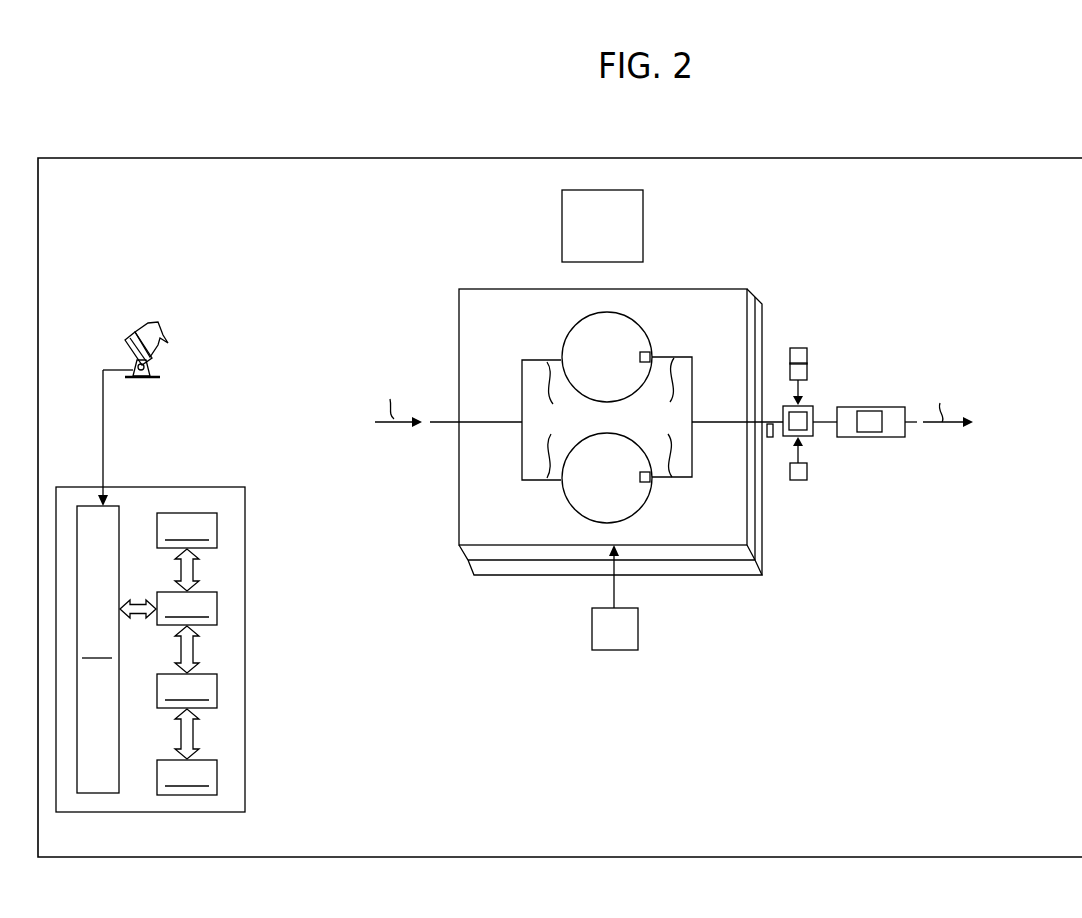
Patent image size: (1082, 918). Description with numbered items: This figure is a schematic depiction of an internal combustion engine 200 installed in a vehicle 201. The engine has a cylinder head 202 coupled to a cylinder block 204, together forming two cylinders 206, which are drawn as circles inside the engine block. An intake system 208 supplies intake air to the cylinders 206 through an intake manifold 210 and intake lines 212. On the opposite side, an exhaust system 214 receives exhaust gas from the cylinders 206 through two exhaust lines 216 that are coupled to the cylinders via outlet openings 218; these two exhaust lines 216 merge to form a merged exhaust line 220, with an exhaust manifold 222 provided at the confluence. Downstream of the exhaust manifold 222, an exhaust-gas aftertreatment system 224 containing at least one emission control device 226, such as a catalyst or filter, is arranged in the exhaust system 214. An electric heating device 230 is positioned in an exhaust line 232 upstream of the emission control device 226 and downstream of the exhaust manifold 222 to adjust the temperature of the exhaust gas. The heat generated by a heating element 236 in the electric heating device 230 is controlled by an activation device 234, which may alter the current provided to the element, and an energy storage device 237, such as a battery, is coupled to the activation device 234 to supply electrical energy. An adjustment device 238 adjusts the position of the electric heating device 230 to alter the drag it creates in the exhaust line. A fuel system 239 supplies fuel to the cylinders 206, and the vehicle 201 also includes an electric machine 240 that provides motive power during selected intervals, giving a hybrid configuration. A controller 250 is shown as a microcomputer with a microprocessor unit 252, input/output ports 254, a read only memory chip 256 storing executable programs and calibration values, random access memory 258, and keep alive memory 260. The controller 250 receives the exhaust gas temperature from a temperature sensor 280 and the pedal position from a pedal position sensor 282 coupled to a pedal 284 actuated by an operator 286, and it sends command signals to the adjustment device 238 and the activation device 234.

The internal combustion engine 200 is at (943, 286).
The vehicle 201 is at (60, 147).
The cylinder head 202 is at (460, 547).
The cylinder block 204 is at (470, 568).
The cylinders 206 is at (575, 325).
The intake system 208 is at (408, 363).
The intake manifold 210 is at (522, 468).
The intake lines 212 is at (552, 420).
The exhaust system 214 is at (866, 352).
The exhaust lines 216 is at (667, 417).
The outlet openings 218 is at (640, 357).
The merged exhaust line 220 is at (720, 421).
The exhaust manifold 222 is at (693, 473).
The exhaust-gas aftertreatment system 224 is at (870, 407).
The emission control device 226 is at (868, 438).
The electric heating device 230 is at (813, 433).
The exhaust line 232 is at (782, 418).
The activation device 234 is at (807, 372).
The heating element 236 is at (802, 408).
The energy storage device 237 is at (797, 348).
The adjustment device 238 is at (797, 481).
The fuel system 239 is at (638, 637).
The electric machine 240 is at (643, 216).
The controller 250 is at (242, 486).
The microprocessor unit 252 is at (218, 598).
The input/output ports 254 is at (120, 510).
The read only memory chip 256 is at (218, 520).
The random access memory 258 is at (218, 688).
The keep alive memory 260 is at (218, 772).
The temperature sensor 280 is at (771, 439).
The pedal position sensor 282 is at (155, 371).
The pedal 284 is at (124, 347).
The operator 286 is at (165, 335).